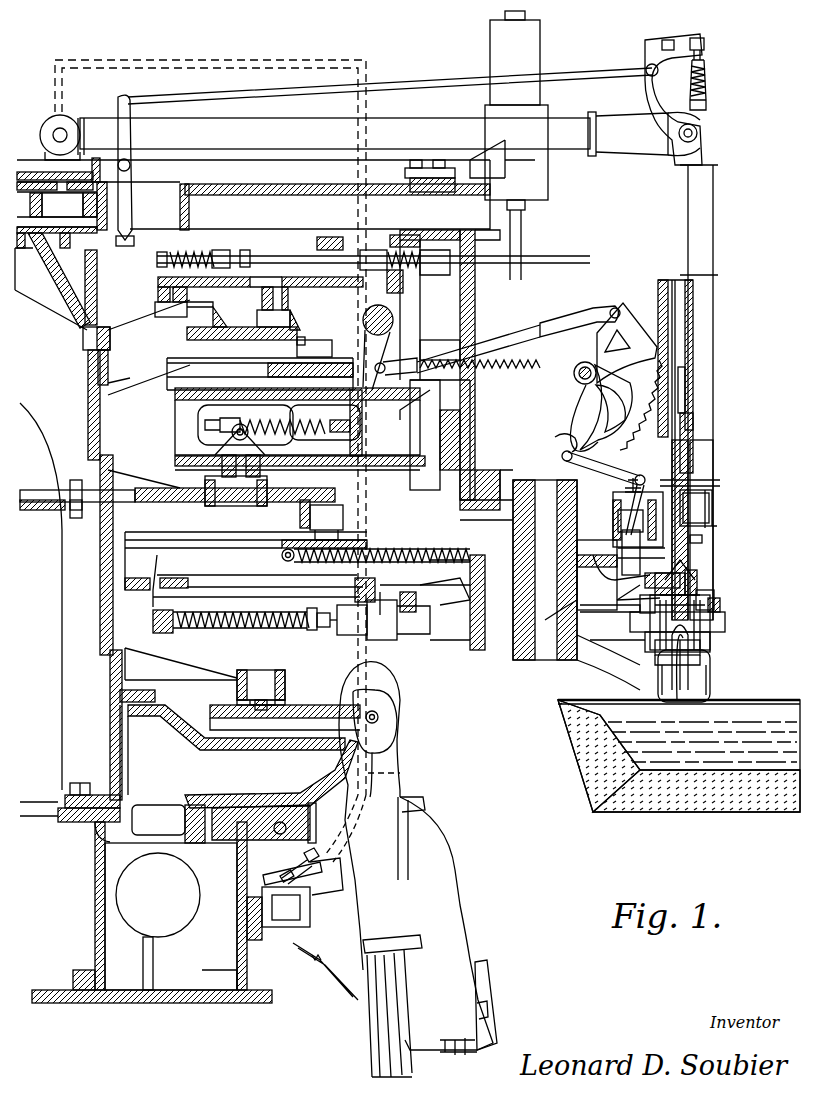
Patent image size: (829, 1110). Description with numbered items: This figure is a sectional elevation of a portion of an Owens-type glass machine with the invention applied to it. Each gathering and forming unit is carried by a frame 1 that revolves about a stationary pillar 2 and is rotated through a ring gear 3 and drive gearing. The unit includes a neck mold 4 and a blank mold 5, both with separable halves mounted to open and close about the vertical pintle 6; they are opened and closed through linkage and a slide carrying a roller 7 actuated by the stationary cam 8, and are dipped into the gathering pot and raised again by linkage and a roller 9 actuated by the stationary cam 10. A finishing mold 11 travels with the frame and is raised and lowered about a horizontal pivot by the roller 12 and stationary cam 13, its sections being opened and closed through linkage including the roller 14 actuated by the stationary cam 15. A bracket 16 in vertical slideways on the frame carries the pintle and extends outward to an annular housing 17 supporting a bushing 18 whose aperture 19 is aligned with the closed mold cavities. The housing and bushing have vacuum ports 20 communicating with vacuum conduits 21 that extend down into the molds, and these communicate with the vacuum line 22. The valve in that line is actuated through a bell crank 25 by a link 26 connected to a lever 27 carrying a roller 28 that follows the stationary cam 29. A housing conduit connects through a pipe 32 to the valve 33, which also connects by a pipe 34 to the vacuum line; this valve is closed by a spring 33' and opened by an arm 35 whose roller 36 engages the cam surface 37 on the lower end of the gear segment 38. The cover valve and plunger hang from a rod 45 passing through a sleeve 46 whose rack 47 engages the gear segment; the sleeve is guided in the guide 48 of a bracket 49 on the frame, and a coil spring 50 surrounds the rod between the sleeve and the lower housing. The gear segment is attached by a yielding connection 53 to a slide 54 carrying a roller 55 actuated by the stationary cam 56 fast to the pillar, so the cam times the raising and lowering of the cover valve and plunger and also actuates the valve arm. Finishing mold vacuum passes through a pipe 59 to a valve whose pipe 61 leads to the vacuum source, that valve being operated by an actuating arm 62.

The frame 1 is at (288, 195).
The stationary pillar 2 is at (103, 610).
The ring gear 3 is at (316, 816).
The neck mold 4 is at (720, 645).
The blank mold 5 is at (712, 692).
The pintle 6 is at (543, 665).
The roller 7 is at (335, 510).
The stationary cam 8 is at (300, 510).
The roller 9 is at (242, 492).
The stationary cam 10 is at (192, 495).
The finishing mold 11 is at (458, 975).
The roller 12 is at (282, 930).
The stationary cam 13 is at (277, 924).
The roller 14 is at (290, 695).
The stationary cam 15 is at (262, 675).
The bracket 16 is at (574, 582).
The annular housing 17 is at (720, 603).
The bushing 18 is at (698, 590).
The aperture 19 is at (686, 580).
The vacuum ports 20 is at (712, 614).
The vacuum conduits 21 is at (712, 648).
The vacuum line 22 is at (280, 125).
The bell crank 25 is at (668, 40).
The link 26 is at (395, 82).
The lever 27 is at (133, 137).
The roller 28 is at (136, 240).
The stationary cam 29 is at (135, 250).
The pipe 32 is at (635, 580).
The valve 33 is at (638, 500).
The spring 33' is at (606, 502).
The pipe 34 is at (655, 530).
The arm 35 is at (630, 482).
The roller 36 is at (563, 460).
The cam surface 37 is at (560, 440).
The gear segment 38 is at (605, 438).
The rod 45 is at (693, 300).
The sleeve 46 is at (705, 450).
The rack 47 is at (720, 484).
The guide 48 is at (693, 414).
The bracket 49 is at (650, 330).
The coil spring 50 is at (700, 550).
The yielding connection 53 is at (542, 324).
The slide 54 is at (282, 372).
The roller 55 is at (322, 350).
The stationary cam 56 is at (300, 337).
The pipe 59 is at (330, 970).
The pipe 61 is at (402, 775).
The actuating arm 62 is at (295, 862).